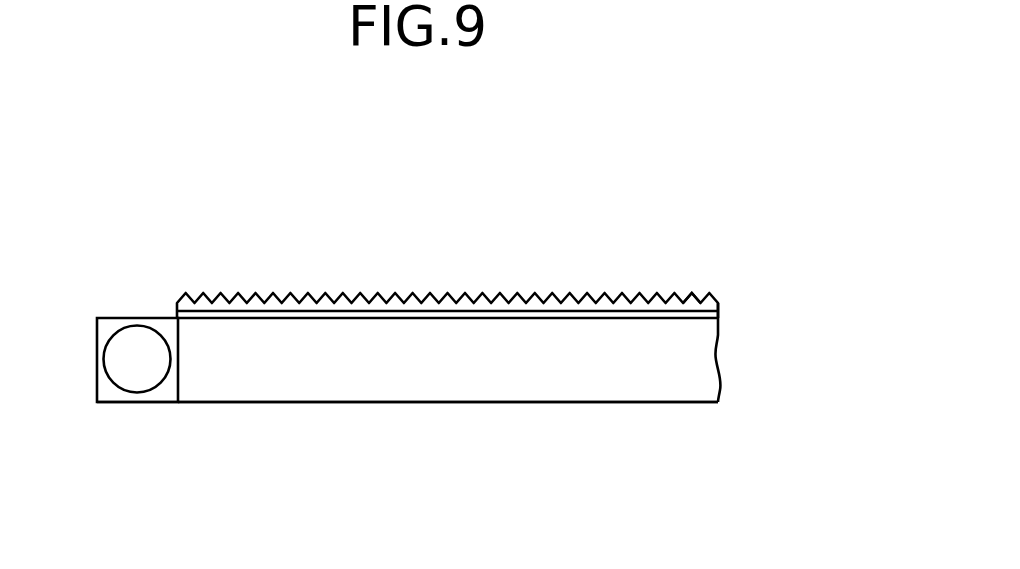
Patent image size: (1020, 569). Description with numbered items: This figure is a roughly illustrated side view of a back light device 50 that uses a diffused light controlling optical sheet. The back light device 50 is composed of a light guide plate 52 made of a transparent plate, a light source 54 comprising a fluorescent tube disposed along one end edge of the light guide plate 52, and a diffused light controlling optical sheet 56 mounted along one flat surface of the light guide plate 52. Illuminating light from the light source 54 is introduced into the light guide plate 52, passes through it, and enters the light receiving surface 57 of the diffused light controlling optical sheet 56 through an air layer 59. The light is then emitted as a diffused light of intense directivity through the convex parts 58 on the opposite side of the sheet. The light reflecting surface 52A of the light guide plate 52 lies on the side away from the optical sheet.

The back light device 50 is at (108, 247).
The light guide plate 52 is at (642, 385).
The light reflecting surface 52A is at (433, 402).
The light source 54 is at (137, 380).
The diffused light controlling optical sheet 56 is at (535, 292).
The light receiving surface 57 is at (692, 309).
The convex parts 58 is at (378, 297).
The air layer 59 is at (310, 317).